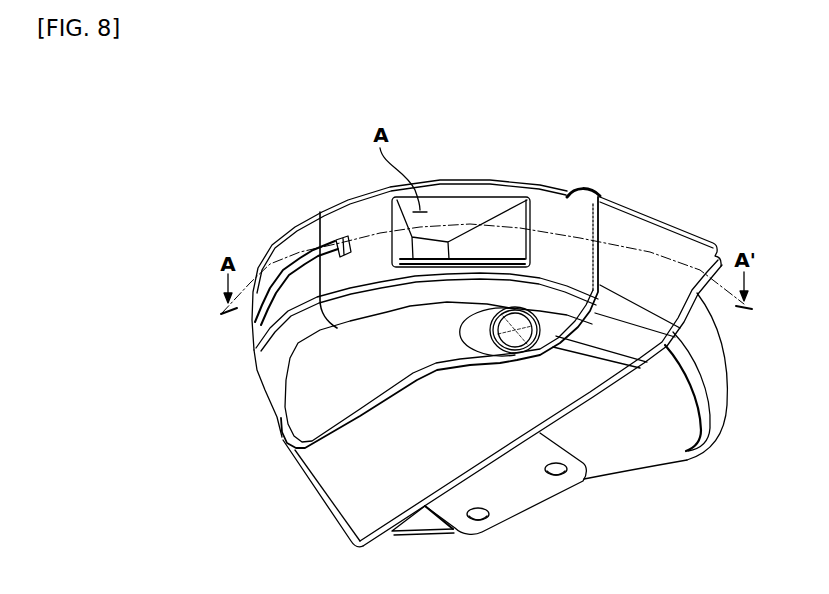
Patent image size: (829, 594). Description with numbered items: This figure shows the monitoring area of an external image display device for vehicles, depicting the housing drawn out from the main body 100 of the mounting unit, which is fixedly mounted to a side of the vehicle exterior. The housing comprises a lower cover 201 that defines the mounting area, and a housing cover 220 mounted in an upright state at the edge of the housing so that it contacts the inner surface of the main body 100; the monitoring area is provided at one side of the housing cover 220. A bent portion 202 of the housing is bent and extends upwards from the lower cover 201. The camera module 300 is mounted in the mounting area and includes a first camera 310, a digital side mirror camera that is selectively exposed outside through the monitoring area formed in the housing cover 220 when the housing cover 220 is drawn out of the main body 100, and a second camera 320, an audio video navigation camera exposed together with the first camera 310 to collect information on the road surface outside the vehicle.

The main body 100 is at (342, 483).
The lower cover 201 is at (300, 399).
The bent portion 202 is at (276, 317).
The housing cover 220 is at (557, 211).
The camera module 300 is at (477, 125).
The first camera 310 is at (430, 247).
The second camera 320 is at (515, 330).